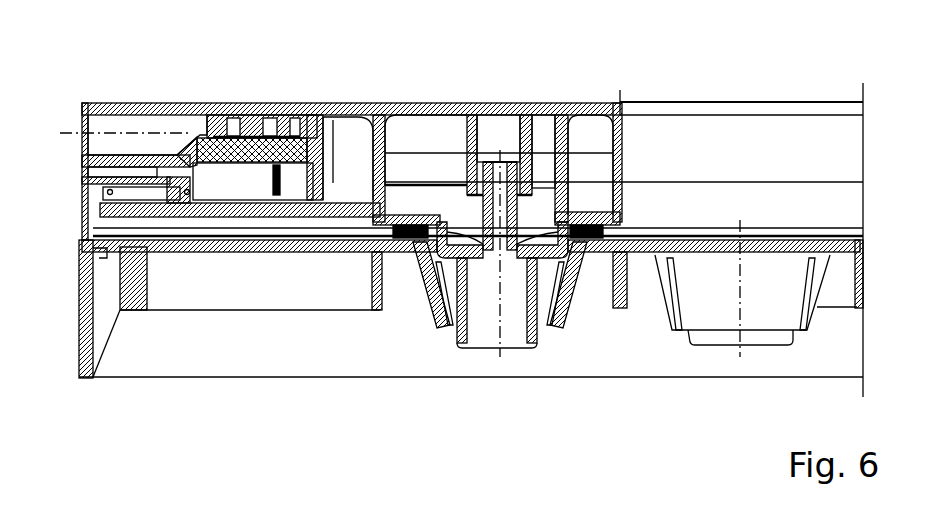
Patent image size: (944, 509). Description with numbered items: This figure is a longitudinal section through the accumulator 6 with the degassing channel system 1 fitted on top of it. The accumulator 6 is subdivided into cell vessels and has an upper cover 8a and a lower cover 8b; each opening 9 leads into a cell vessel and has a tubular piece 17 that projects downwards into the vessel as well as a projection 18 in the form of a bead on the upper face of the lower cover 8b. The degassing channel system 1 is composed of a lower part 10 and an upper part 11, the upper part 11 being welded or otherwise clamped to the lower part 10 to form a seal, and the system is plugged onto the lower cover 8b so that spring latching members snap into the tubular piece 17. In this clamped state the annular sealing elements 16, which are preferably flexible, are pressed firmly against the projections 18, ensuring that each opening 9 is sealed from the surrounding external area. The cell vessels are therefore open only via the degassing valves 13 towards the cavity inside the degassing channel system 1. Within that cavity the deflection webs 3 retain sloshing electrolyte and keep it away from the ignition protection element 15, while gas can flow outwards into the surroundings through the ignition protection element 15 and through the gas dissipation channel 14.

The degassing channel system 1 is at (102, 80).
The deflection webs 3 is at (345, 107).
The accumulator 6 is at (108, 388).
The upper cover 8a is at (207, 105).
The lower cover 8b is at (197, 247).
The opening 9 is at (500, 352).
The lower part 10 is at (302, 213).
The upper part 11 is at (743, 102).
The degassing valve 13 is at (503, 160).
The gas dissipation channel 14 is at (153, 122).
The ignition protection element 15 is at (250, 150).
The annular sealing element 16 is at (408, 218).
The tubular piece 17 is at (565, 330).
The projection 18 is at (403, 255).